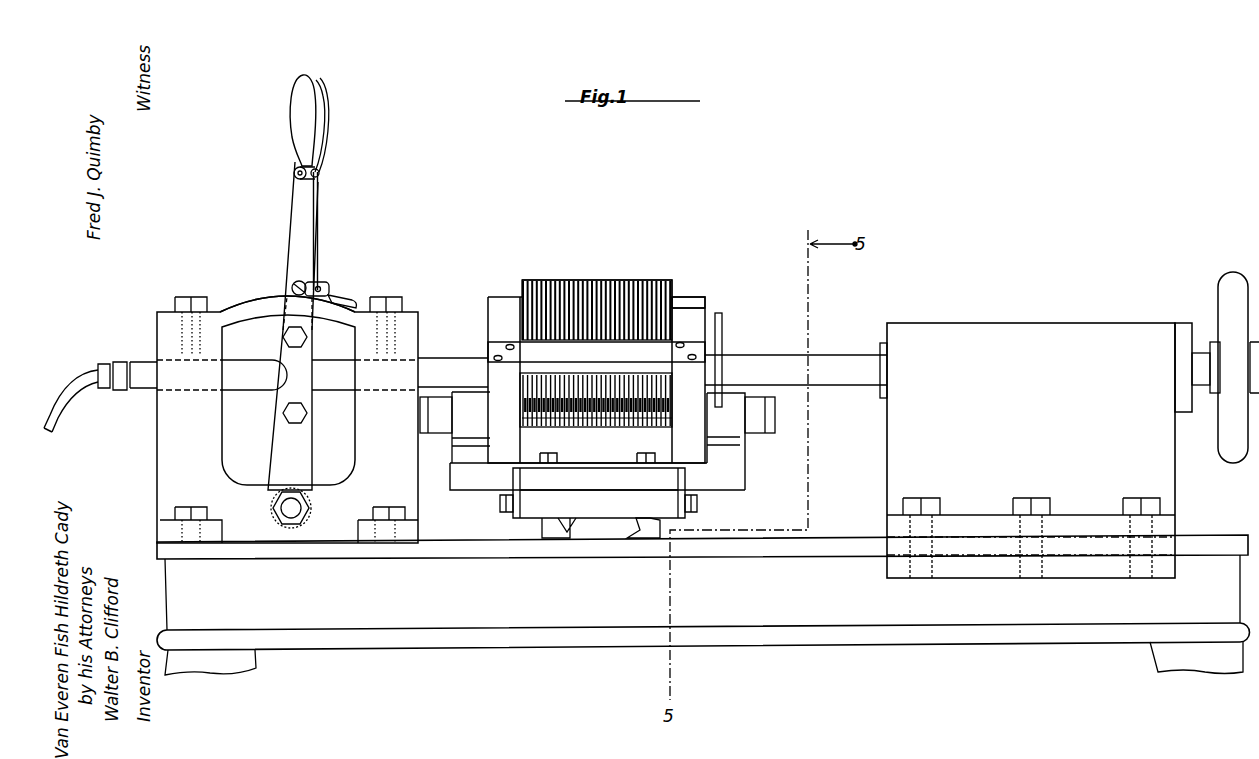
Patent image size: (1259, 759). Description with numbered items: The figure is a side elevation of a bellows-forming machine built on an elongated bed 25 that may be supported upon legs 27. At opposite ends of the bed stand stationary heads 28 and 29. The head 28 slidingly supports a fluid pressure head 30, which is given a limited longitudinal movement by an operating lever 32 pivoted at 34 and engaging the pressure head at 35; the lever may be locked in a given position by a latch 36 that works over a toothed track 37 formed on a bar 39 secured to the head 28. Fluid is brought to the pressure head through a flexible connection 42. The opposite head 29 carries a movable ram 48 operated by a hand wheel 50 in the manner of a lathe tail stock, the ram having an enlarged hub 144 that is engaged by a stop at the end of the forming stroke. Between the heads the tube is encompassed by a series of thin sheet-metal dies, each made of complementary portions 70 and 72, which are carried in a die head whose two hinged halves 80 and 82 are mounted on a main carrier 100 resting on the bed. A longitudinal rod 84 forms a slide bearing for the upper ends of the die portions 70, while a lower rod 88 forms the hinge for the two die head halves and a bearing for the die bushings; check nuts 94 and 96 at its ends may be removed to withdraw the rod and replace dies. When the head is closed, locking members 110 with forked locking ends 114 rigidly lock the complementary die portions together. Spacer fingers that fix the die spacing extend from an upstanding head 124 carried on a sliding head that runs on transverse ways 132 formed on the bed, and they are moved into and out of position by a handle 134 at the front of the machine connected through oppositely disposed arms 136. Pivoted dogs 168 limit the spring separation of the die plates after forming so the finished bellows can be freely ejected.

The bed 25 is at (1130, 613).
The legs 27 is at (252, 660).
The stationary head 28 is at (412, 305).
The stationary head 29 is at (1112, 330).
The fluid pressure head 30 is at (445, 338).
The operating lever 32 is at (306, 204).
The pivot 34 is at (300, 508).
The engagement point 35 is at (313, 390).
The latch 36 is at (328, 290).
The toothed track 37 is at (340, 300).
The bar 39 is at (245, 300).
The flexible connection 42 is at (87, 370).
The movable ram 48 is at (830, 362).
The hand wheel 50 is at (1230, 287).
The die portion 70 is at (580, 420).
The die portion 72 is at (573, 418).
The die head portion 80 is at (695, 302).
The die head portion 82 is at (697, 347).
The longitudinal rod 84 is at (672, 330).
The hinge rod 88 is at (634, 418).
The check nut 94 is at (765, 433).
The check nut 96 is at (432, 420).
The main carrier 100 is at (745, 478).
The locking member 110 is at (672, 297).
The forked locking end 114 is at (672, 297).
The upstanding head 124 is at (528, 447).
The transverse ways 132 is at (575, 527).
The handle 134 is at (605, 490).
The arms 136 is at (500, 500).
The enlarged hub 144 is at (883, 350).
The pivoted dog 168 is at (720, 338).